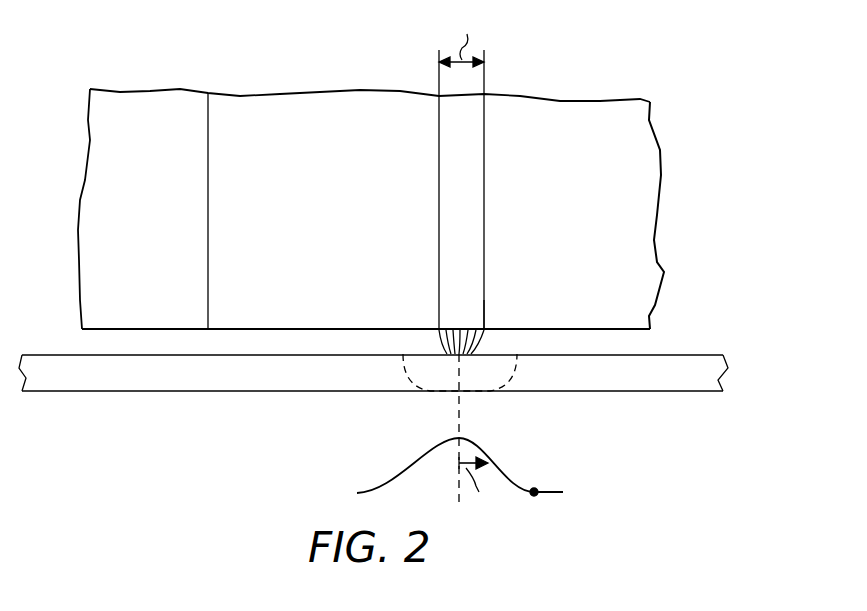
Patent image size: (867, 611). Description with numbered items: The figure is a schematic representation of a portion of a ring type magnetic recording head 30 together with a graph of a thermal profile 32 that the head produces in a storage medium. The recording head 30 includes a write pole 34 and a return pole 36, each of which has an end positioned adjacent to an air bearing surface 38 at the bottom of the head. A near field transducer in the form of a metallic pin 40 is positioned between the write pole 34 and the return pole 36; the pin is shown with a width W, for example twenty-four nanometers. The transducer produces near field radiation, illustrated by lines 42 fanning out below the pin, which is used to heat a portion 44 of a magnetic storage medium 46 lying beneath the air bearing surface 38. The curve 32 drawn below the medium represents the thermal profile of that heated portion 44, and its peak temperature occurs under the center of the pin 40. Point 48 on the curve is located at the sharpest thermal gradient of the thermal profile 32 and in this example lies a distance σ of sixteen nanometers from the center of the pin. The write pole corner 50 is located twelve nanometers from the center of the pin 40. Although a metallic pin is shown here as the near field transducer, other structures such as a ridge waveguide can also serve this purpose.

The ring type magnetic recording head 30 is at (692, 130).
The thermal profile 32 is at (540, 492).
The write pole 34 is at (640, 240).
The return pole 36 is at (93, 232).
The air bearing surface 38 is at (122, 329).
The metallic pin 40 is at (448, 218).
The near field radiation lines 42 is at (440, 347).
The heated portion 44 is at (420, 373).
The magnetic storage medium 46 is at (695, 365).
The sharpest thermal gradient point 48 is at (490, 465).
The write pole corner 50 is at (484, 328).